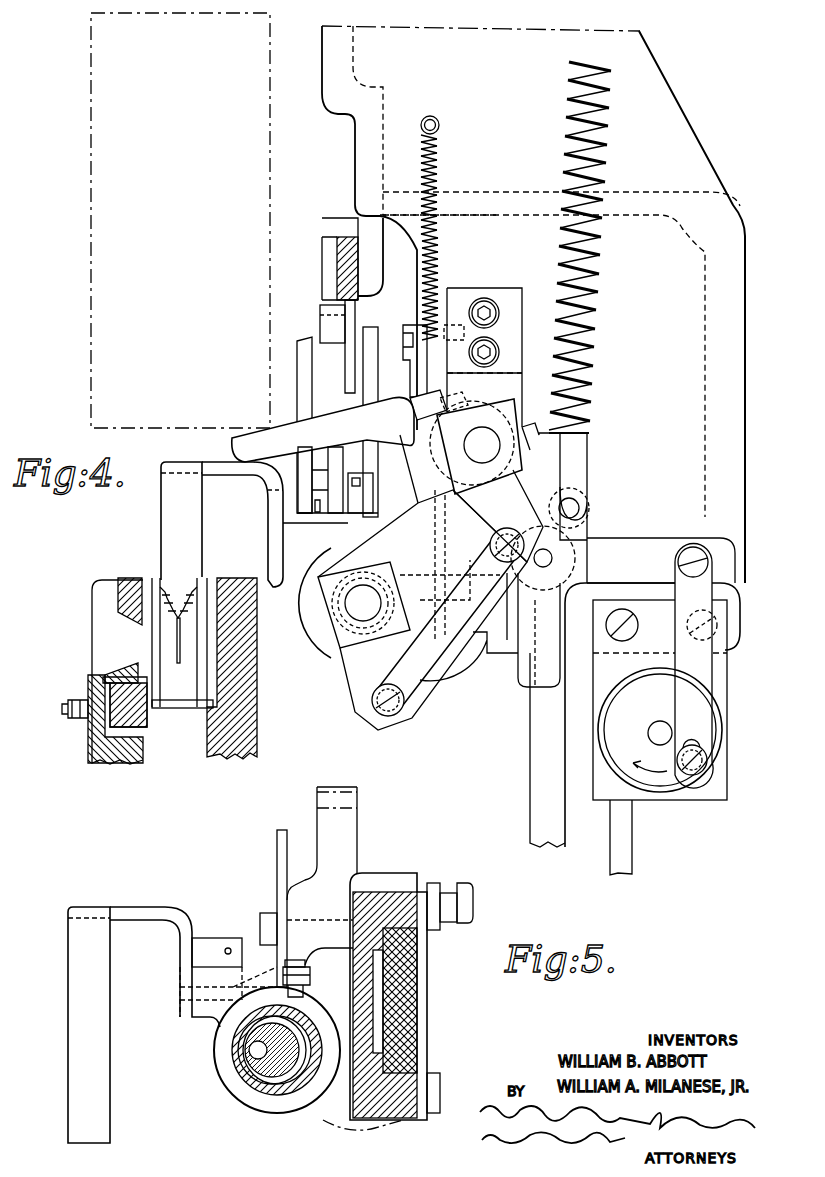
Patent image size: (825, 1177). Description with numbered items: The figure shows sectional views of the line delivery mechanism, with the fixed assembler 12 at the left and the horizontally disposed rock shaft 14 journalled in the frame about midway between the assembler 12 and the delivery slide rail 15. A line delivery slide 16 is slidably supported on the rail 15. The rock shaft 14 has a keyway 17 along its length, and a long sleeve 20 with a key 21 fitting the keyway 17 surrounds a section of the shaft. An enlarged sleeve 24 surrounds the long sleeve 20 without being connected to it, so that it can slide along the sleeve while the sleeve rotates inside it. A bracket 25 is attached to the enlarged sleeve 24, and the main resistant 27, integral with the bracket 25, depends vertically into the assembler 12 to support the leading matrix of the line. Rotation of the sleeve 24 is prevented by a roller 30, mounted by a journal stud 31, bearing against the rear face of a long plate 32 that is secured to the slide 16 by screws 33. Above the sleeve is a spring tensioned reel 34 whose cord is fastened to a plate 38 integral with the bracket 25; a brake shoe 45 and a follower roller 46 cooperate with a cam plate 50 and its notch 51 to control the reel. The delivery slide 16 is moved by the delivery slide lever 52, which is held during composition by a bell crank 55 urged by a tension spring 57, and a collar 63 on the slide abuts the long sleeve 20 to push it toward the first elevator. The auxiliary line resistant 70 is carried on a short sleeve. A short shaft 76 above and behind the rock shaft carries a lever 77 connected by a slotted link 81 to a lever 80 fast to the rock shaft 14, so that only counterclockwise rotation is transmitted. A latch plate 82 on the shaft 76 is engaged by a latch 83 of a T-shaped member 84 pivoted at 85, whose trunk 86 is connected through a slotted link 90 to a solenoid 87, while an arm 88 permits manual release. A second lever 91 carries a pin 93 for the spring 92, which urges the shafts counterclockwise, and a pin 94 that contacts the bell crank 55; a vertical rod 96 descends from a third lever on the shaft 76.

In FIG. 4, the assembler 12 is at (100, 647).
In FIG. 4, the rock shaft 14 is at (357, 610).
In FIG. 5, the rock shaft 14 is at (287, 1062).
In FIG. 5, the delivery slide rail 15 is at (410, 1010).
In FIG. 5, the line delivery slide 16 is at (392, 893).
In FIG. 5, the keyway 17 is at (248, 1070).
In FIG. 5, the long sleeve 20 is at (262, 1085).
In FIG. 5, the key 21 is at (256, 1052).
In FIG. 5, the enlarged sleeve 24 is at (215, 1047).
In FIG. 4, the bracket 25 is at (280, 522).
In FIG. 5, the bracket 25 is at (136, 905).
In FIG. 4, the main resistant 27 is at (170, 522).
In FIG. 5, the main resistant 27 is at (70, 1035).
In FIG. 5, the roller 30 is at (311, 978).
In FIG. 5, the journal stud 31 is at (298, 966).
In FIG. 4, the long plate 32 is at (376, 352).
In FIG. 5, the long plate 32 is at (280, 848).
In FIG. 4, the screws 33 is at (361, 495).
In FIG. 5, the screws 33 is at (262, 928).
In FIG. 4, the spring tensioned reel 34 is at (305, 351).
In FIG. 5, the plate 38 is at (206, 945).
In FIG. 4, the brake shoe 45 is at (317, 462).
In FIG. 4, the follower roller 46 is at (332, 320).
In FIG. 4, the cam plate 50 is at (342, 258).
In FIG. 4, the notch 51 is at (370, 300).
In FIG. 4, the delivery slide lever 52 is at (540, 780).
In FIG. 4, the bell crank 55 is at (425, 373).
In FIG. 4, the tension spring 57 is at (440, 165).
In FIG. 4, the collar 63 is at (305, 612).
In FIG. 4, the auxiliary line resistant 70 is at (281, 425).
In FIG. 4, the short shaft 76 is at (487, 455).
In FIG. 4, the lever 77 is at (490, 414).
In FIG. 4, the lever 80 is at (355, 700).
In FIG. 4, the slotted link 81 is at (440, 663).
In FIG. 4, the latch plate 82 is at (470, 406).
In FIG. 4, the latch 83 is at (537, 430).
In FIG. 4, the T-shaped member 84 is at (575, 541).
In FIG. 4, the pivot 85 is at (545, 566).
In FIG. 4, the trunk 86 is at (660, 545).
In FIG. 4, the solenoid 87 is at (668, 782).
In FIG. 4, the arm 88 is at (530, 675).
In FIG. 4, the link 90 is at (705, 672).
In FIG. 4, the second lever 91 is at (588, 525).
In FIG. 4, the spring 92 is at (590, 268).
In FIG. 4, the pin 93 is at (580, 503).
In FIG. 4, the pin 94 is at (417, 412).
In FIG. 4, the vertical rod 96 is at (636, 859).